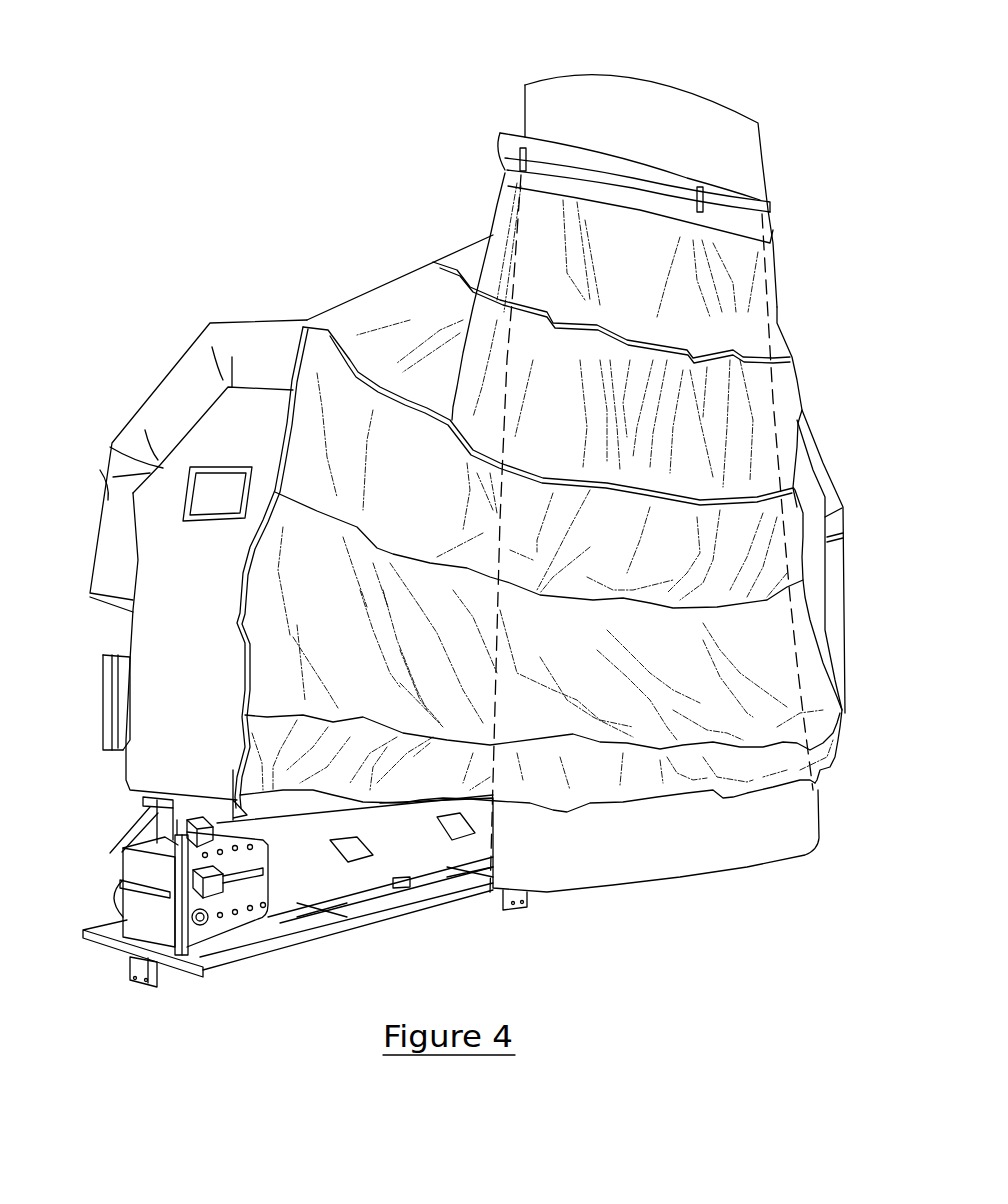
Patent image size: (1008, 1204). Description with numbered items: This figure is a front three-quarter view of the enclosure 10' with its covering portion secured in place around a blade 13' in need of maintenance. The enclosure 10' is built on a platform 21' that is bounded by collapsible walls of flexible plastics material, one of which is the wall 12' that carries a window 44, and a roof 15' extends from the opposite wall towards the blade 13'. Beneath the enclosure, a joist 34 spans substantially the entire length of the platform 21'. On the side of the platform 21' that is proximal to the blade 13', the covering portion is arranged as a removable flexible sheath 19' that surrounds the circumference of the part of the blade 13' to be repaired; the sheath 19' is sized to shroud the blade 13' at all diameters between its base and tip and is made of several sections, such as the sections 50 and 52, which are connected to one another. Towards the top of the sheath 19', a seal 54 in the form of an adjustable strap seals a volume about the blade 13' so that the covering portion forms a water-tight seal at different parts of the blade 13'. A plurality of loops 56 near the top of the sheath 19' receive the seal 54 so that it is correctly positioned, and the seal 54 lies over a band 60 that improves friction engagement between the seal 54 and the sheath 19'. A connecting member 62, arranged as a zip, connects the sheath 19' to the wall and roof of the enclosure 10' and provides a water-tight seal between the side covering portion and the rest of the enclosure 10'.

The enclosure 10' is at (208, 215).
The wall 12' is at (135, 646).
The blade 13' is at (651, 159).
The roof 15' is at (191, 462).
The flexible sheath 19' is at (400, 260).
The platform 21' is at (115, 817).
The joist 34 is at (140, 918).
The window 44 is at (210, 497).
The section of sheath 50 is at (777, 338).
The section of sheath 52 is at (803, 412).
The seal 54 is at (512, 158).
The loops 56 is at (718, 193).
The band 60 is at (577, 152).
The connecting member 62 is at (250, 800).